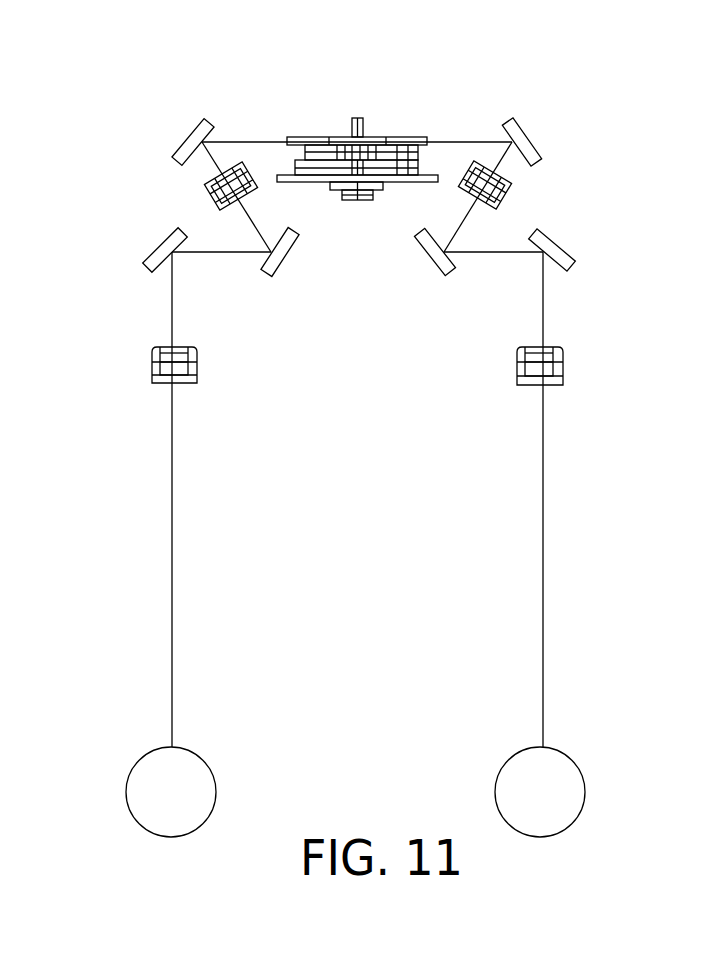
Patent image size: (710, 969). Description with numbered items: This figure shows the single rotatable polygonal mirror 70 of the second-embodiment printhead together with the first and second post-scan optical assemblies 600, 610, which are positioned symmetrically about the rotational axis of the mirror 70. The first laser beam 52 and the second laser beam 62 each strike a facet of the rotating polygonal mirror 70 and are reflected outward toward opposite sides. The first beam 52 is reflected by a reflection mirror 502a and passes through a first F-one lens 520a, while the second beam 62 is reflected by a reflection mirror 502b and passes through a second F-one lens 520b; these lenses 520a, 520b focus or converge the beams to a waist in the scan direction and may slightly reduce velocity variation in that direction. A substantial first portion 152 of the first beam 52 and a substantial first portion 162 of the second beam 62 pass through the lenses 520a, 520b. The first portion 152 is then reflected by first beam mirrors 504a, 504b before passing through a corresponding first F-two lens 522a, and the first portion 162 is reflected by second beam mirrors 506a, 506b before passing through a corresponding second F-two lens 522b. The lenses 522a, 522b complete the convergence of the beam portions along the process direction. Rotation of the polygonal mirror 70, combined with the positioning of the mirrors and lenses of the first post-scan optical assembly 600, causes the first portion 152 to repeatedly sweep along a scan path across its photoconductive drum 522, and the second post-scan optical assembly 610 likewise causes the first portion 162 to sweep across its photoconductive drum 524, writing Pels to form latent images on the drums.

The rotatable polygonal mirror 70 is at (374, 90).
The second laser beam 62 is at (267, 141).
The first laser beam 52 is at (478, 141).
The second post-scan optical assembly 610 is at (120, 140).
The first post-scan optical assembly 600 is at (600, 170).
The reflection mirror 502a is at (532, 142).
The reflection mirror 502b is at (207, 120).
The first F-1 lens 520a is at (500, 197).
The second F-1 lens 520b is at (207, 192).
The first beam mirror 504a is at (445, 275).
The first beam mirror 504b is at (567, 270).
The second beam mirror 506a is at (283, 266).
The second beam mirror 506b is at (147, 268).
The first F-2 lens 522a is at (517, 380).
The second F-2 lens 522b is at (197, 380).
The first portion of the first beam 152 is at (543, 530).
The first portion of the second beam 162 is at (172, 577).
The photoconductive drum 522 is at (600, 730).
The photoconductive drum 524 is at (240, 735).